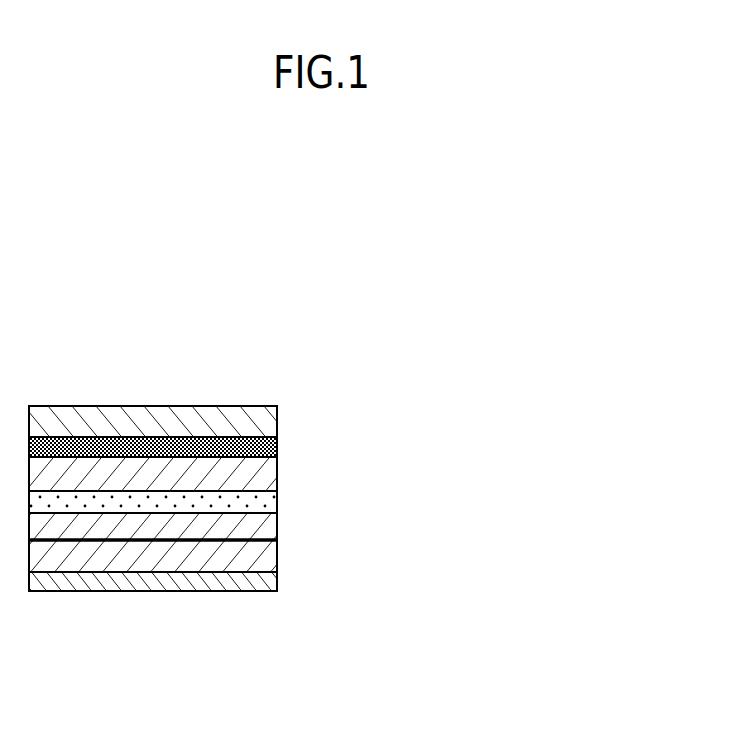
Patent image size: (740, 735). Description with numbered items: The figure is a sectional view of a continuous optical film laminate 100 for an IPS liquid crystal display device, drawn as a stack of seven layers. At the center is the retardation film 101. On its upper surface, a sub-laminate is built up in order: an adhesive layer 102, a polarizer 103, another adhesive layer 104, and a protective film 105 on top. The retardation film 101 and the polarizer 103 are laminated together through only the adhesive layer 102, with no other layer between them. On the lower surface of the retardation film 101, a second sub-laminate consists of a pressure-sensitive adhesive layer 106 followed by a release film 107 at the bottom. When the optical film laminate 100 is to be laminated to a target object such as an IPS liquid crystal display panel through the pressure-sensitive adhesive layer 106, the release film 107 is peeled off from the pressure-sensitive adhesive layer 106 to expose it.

The optical film laminate 100 is at (182, 332).
The protective film 105 is at (277, 412).
The adhesive layer 104 is at (277, 444).
The polarizer 103 is at (277, 470).
The adhesive layer 102 is at (277, 505).
The retardation film 101 is at (277, 532).
The pressure-sensitive adhesive layer 106 is at (277, 558).
The release film 107 is at (277, 580).